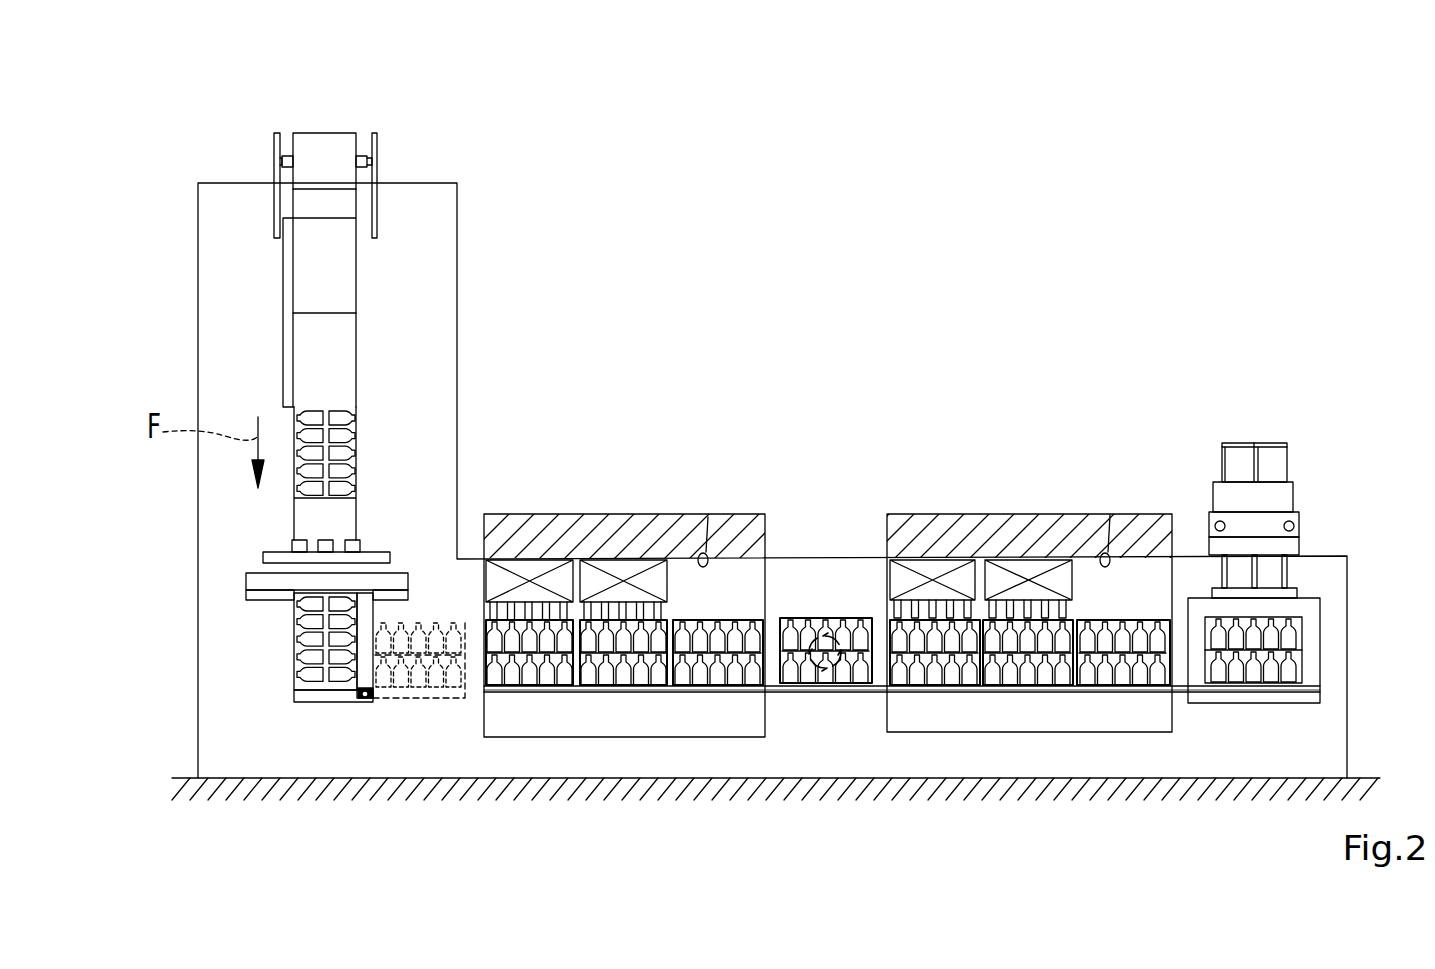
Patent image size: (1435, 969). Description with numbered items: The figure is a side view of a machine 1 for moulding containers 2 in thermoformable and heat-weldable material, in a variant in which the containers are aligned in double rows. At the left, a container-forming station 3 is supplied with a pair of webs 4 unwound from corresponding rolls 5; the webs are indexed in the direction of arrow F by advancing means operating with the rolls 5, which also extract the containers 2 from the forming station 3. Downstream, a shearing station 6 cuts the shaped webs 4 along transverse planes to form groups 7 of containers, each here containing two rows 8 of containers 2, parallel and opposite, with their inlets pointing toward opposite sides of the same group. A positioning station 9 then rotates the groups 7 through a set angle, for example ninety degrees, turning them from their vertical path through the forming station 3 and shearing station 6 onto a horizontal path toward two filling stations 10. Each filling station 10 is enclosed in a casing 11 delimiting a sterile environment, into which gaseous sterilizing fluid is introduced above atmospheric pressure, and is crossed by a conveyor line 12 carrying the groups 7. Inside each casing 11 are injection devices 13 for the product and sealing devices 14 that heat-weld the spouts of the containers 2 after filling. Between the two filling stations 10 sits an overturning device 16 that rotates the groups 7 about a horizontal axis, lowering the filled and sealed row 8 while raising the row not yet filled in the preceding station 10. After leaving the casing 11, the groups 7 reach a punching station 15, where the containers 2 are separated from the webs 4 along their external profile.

The machine 1 is at (1145, 225).
The containers 2 is at (338, 413).
The container-forming station 3 is at (407, 305).
The webs 4 is at (332, 207).
The rolls 5 is at (333, 133).
The shearing station 6 is at (245, 558).
The groups of containers 7 is at (280, 655).
The rows of containers 8 is at (310, 713).
The positioning station 9 is at (375, 713).
The filling stations 10 is at (656, 497).
The casing 11 is at (708, 517).
The conveyor line 12 is at (725, 688).
The injection devices 13 is at (528, 570).
The sealing devices 14 is at (740, 593).
The punching station 15 is at (1323, 477).
The overturning device 16 is at (826, 590).